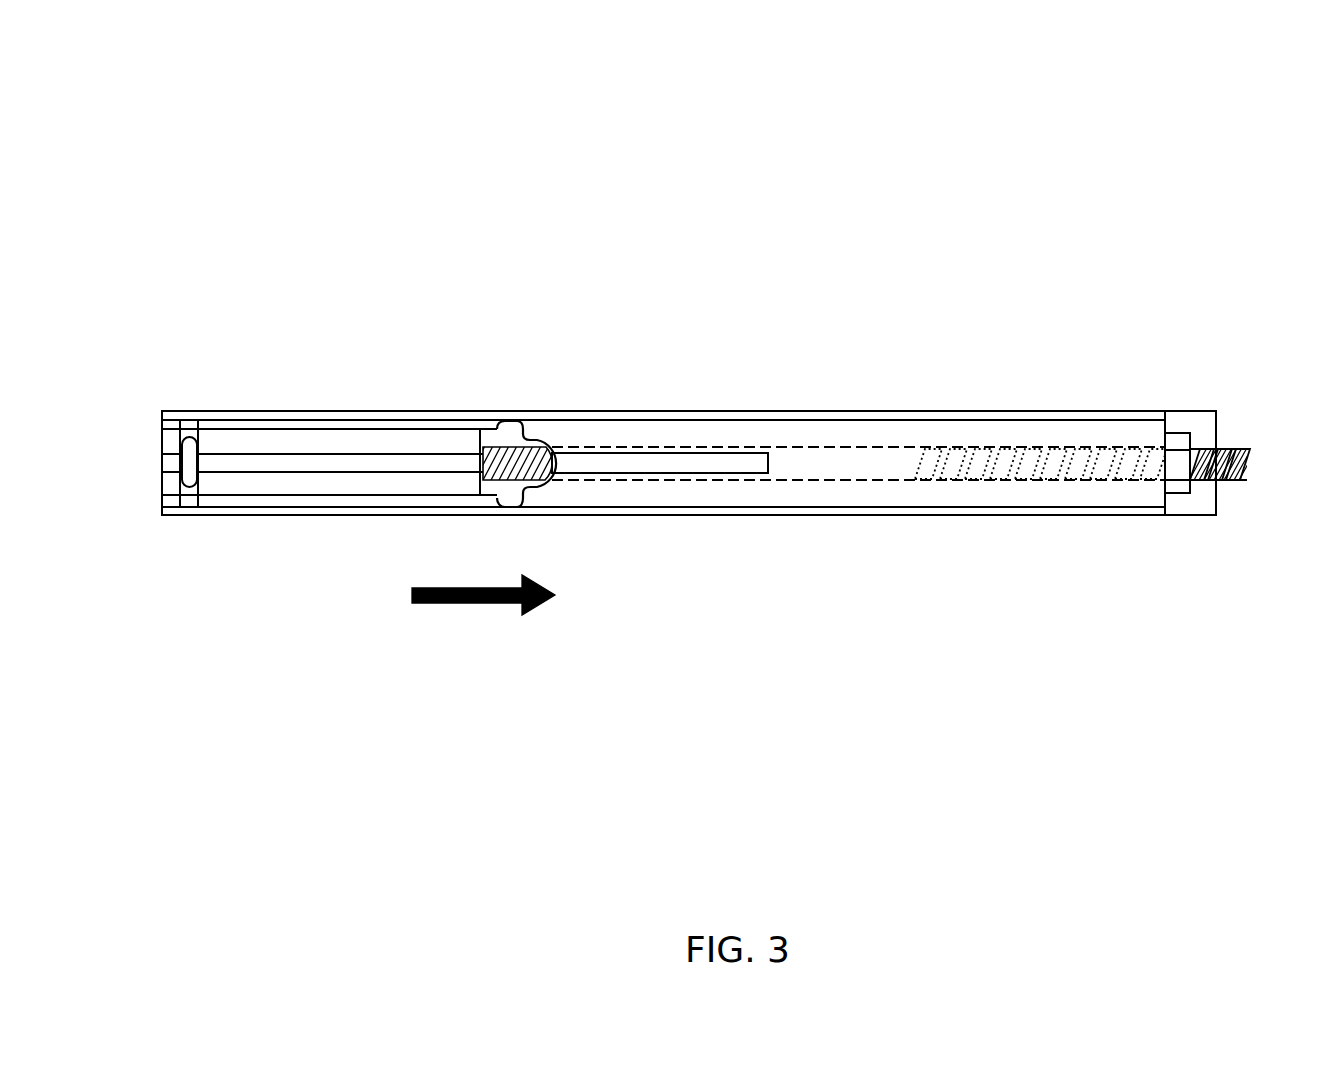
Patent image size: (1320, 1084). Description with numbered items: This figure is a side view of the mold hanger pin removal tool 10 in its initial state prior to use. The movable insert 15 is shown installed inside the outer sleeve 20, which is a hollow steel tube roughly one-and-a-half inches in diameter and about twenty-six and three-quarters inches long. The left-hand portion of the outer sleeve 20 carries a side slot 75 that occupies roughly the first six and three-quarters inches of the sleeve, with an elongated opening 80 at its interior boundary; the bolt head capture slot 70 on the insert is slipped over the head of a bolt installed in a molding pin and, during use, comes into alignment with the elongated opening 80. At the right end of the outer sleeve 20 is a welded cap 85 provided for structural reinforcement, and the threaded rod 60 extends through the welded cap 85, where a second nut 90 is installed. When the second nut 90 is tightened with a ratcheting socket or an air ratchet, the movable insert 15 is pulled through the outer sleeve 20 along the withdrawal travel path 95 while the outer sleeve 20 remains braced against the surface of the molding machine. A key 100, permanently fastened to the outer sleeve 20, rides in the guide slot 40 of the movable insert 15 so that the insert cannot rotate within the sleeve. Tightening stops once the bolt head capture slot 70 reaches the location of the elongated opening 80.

The mold hanger pin removal tool 10 is at (330, 216).
The movable insert 15 is at (360, 490).
The outer sleeve 20 is at (800, 410).
The guide slot 40 is at (298, 467).
The threaded rod 60 is at (930, 465).
The bolt head capture slot 70 is at (193, 467).
The side slot 75 is at (380, 428).
The elongated opening 80 is at (520, 423).
The welded cap 85 is at (1190, 517).
The second nut 90 is at (1175, 470).
The withdrawal travel path 95 is at (527, 612).
The key 100 is at (678, 472).